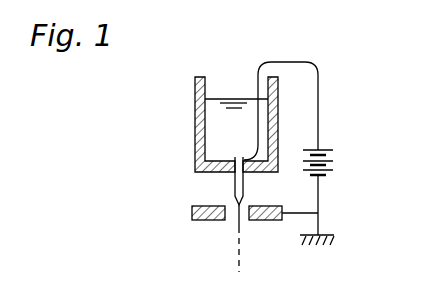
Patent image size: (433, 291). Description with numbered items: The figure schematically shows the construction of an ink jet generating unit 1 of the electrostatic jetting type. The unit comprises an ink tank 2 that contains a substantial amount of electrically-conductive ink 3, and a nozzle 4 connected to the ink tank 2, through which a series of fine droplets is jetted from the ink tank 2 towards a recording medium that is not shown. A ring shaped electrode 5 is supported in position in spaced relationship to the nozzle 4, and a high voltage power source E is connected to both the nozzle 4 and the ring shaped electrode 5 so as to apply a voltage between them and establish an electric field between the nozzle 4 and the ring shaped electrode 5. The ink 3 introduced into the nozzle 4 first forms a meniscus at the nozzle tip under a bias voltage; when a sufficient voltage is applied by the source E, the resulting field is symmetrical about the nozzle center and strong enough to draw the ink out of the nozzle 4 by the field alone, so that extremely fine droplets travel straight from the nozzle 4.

The ink jet generating unit 1 is at (183, 115).
The ink tank 2 is at (200, 77).
The electrically-conductive ink 3 is at (232, 99).
The nozzle 4 is at (238, 183).
The ring shaped electrode 5 is at (208, 222).
The high voltage power source E is at (334, 155).